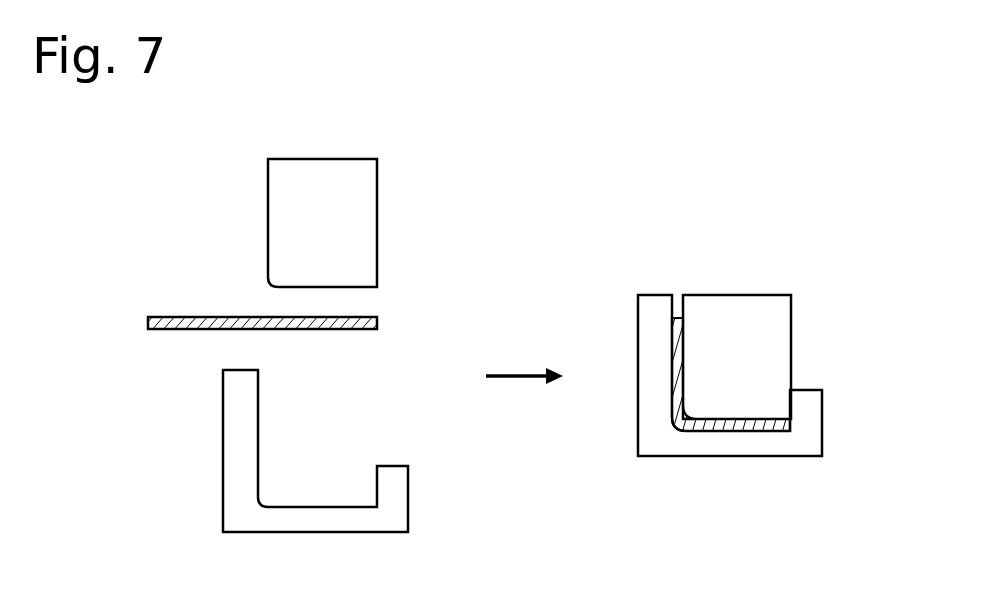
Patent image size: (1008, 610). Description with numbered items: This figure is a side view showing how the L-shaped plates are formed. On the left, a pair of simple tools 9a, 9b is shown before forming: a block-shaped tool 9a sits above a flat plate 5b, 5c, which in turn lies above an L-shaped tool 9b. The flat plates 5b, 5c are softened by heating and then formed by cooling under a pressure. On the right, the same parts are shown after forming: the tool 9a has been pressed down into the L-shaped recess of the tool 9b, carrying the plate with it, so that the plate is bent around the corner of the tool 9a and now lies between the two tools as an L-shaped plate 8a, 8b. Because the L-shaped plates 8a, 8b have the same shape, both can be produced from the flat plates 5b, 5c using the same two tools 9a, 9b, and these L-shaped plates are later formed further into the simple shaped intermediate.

The tool 9a is at (292, 208).
The tool 9b is at (235, 427).
The flat plate 5b is at (247, 284).
The flat plate 5c is at (205, 320).
The L-shaped plate 8a is at (738, 400).
The L-shaped plate 8b is at (738, 425).